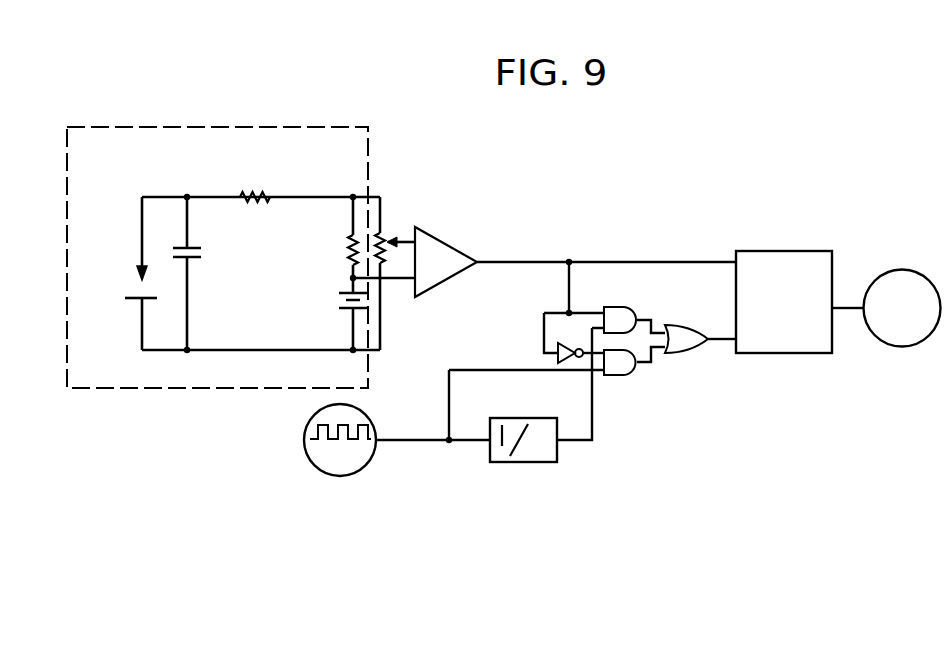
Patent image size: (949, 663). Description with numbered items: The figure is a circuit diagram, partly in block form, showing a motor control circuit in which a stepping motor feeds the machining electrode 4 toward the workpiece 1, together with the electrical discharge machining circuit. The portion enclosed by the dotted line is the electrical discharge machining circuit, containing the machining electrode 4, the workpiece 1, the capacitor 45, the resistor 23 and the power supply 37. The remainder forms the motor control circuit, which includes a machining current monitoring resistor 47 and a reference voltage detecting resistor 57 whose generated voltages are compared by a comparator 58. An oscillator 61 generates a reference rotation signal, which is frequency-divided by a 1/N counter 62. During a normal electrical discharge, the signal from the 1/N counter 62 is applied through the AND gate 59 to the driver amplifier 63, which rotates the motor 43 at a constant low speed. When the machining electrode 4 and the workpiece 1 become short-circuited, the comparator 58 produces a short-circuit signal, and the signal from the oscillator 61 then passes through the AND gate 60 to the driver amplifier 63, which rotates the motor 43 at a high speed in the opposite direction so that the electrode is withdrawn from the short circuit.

The workpiece 1 is at (130, 301).
The machining electrode 4 is at (140, 240).
The resistor 23 is at (252, 195).
The power supply 37 is at (338, 302).
The motor 43 is at (908, 271).
The capacitor 45 is at (201, 255).
The machining current monitoring resistor 47 is at (346, 252).
The reference voltage detecting resistor 57 is at (388, 232).
The comparator 58 is at (450, 245).
The AND gate 59 is at (622, 306).
The AND gate 60 is at (628, 376).
The oscillator 61 is at (345, 476).
The 1/N counter 62 is at (522, 463).
The driver amplifier 63 is at (772, 250).